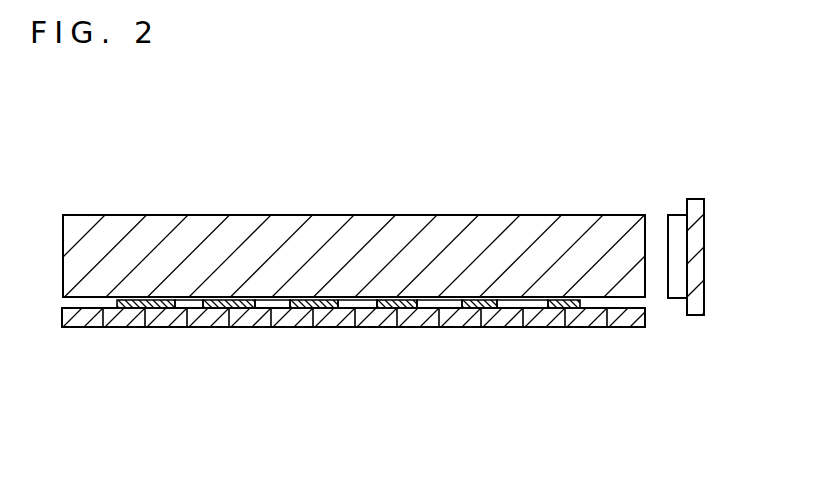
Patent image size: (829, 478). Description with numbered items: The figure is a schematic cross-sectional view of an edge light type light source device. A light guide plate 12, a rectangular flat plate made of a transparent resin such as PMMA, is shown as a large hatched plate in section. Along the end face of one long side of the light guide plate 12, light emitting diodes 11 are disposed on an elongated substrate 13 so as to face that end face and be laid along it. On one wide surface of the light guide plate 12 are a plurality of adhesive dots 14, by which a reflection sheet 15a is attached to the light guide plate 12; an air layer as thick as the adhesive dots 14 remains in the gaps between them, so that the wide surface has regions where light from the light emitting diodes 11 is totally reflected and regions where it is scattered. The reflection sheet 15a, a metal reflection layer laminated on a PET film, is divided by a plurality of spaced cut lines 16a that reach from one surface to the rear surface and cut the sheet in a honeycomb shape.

The light emitting diode 11 is at (679, 215).
The light guide plate 12 is at (450, 228).
The substrate 13 is at (698, 238).
The adhesive dots 14 is at (209, 327).
The reflection sheet 15a is at (385, 343).
The cut lines 16a is at (325, 327).